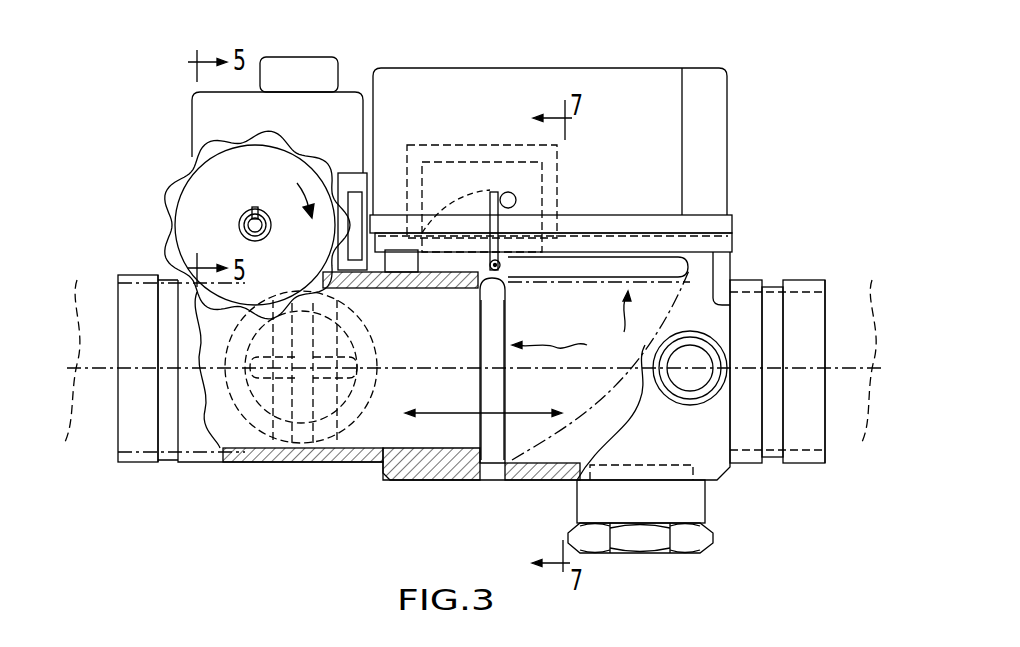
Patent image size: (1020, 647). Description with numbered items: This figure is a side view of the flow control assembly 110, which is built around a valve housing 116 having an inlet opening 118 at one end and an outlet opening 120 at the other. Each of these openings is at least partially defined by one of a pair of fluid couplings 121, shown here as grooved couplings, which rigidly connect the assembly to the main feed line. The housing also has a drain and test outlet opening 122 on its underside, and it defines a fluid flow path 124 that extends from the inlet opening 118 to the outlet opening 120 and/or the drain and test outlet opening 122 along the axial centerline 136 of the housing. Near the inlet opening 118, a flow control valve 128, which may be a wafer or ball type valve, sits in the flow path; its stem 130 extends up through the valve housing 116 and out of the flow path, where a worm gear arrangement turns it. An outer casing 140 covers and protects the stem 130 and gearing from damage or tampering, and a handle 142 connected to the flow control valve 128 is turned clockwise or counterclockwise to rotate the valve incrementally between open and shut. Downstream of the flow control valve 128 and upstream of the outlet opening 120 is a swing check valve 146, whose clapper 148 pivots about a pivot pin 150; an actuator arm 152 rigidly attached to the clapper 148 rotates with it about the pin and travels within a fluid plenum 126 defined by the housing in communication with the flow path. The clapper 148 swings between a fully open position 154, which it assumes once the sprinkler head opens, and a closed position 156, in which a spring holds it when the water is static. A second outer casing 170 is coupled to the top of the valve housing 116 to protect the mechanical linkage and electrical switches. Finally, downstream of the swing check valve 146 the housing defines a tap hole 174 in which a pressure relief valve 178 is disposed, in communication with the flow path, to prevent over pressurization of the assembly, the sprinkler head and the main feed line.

The flow control assembly 110 is at (792, 110).
The valve housing 116 is at (383, 467).
The inlet opening 118 is at (128, 430).
The outlet opening 120 is at (813, 322).
The fluid couplings 121 is at (140, 462).
The drain and test outlet opening 122 is at (645, 543).
The fluid flow path 124 is at (525, 410).
The fluid plenum 126 is at (475, 189).
The flow control valve 128 is at (250, 410).
The stem 130 is at (340, 80).
The axial centerline 136 is at (466, 366).
The outer casing 140 is at (192, 115).
The handle 142 is at (305, 172).
The swing check valve 146 is at (571, 326).
The clapper 148 is at (708, 268).
The pivot pin 150 is at (500, 276).
The actuator arm 152 is at (493, 192).
The fully open position 154 is at (670, 284).
The closed position 156 is at (478, 435).
The outer casing 170 is at (647, 88).
The tap hole 174 is at (696, 385).
The pressure relief valve 178 is at (682, 403).